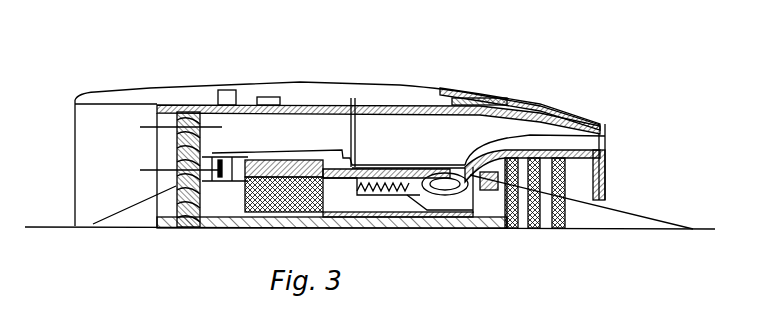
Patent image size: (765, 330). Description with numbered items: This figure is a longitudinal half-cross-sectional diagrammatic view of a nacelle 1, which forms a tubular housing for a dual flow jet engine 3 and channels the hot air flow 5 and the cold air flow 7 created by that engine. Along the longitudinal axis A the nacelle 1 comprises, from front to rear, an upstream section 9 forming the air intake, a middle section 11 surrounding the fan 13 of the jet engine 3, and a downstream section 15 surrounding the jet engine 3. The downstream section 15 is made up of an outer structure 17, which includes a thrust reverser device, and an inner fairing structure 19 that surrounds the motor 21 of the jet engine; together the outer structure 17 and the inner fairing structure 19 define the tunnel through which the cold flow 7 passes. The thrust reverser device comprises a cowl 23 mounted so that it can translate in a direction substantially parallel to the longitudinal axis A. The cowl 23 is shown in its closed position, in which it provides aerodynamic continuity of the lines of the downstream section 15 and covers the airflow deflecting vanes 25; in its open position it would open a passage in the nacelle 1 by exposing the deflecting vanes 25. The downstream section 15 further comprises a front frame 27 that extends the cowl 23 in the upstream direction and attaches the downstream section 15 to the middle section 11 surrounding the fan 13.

The nacelle 1 is at (150, 52).
The dual flow jet engine 3 is at (382, 240).
The hot air flow 5 is at (582, 172).
The cold air flow 7 is at (383, 135).
The upstream section 9 is at (108, 95).
The middle section 11 is at (309, 80).
The fan 13 is at (207, 148).
The downstream section 15 is at (529, 89).
The outer structure 17 is at (466, 163).
The inner fairing structure 19 is at (606, 137).
The motor 21 is at (492, 208).
The cowl 23 is at (572, 101).
The airflow deflecting vanes 25 is at (467, 148).
The front frame 27 is at (440, 98).
The longitudinal axis A is at (661, 235).